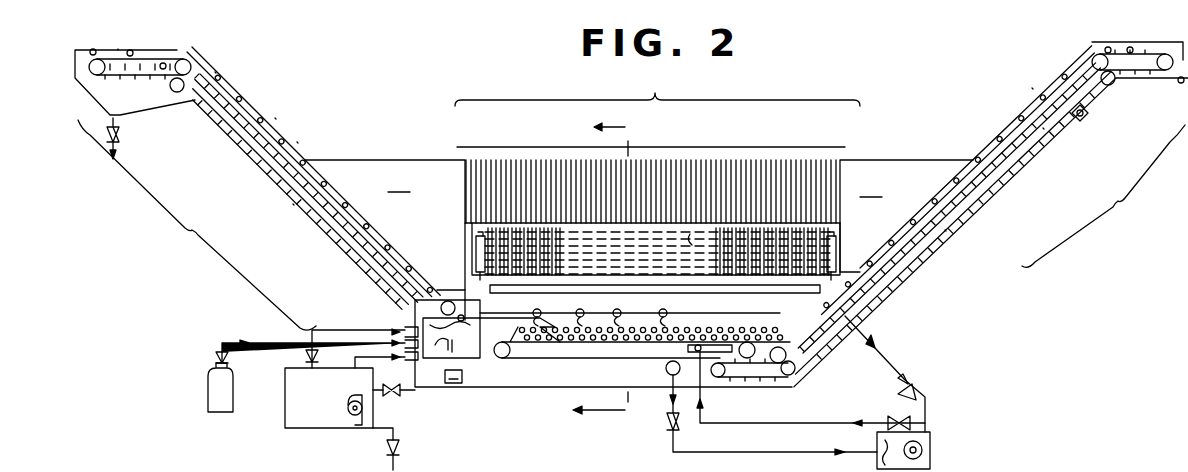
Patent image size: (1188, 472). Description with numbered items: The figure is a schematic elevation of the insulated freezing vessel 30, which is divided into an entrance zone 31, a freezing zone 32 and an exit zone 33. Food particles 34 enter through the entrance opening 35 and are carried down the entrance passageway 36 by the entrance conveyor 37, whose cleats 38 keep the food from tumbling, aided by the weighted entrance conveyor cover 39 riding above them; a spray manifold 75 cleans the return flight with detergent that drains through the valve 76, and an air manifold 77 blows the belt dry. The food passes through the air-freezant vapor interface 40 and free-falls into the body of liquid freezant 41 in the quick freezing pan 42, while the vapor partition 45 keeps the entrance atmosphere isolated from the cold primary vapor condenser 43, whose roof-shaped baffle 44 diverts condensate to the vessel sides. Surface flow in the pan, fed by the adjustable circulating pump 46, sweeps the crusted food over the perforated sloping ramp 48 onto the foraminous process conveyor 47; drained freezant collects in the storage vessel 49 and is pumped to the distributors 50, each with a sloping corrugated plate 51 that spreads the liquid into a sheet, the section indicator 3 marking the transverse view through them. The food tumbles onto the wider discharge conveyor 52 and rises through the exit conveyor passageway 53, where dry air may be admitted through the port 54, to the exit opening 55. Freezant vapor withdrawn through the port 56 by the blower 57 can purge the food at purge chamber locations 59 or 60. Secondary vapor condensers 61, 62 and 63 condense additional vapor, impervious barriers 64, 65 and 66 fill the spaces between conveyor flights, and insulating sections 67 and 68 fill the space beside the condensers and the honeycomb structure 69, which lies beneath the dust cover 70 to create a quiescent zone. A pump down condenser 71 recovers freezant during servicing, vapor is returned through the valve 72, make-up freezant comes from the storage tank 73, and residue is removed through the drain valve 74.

The section line 3- 3 is at (604, 270).
The insulated freezing vessel 30 is at (368, 156).
The entrance zone 31 is at (197, 225).
The freezing zone 32 is at (657, 90).
The exit zone 33 is at (1103, 196).
The food particles 34 is at (130, 50).
The entrance opening 35 is at (121, 52).
The entrance passageway 36 is at (244, 94).
The entrance conveyor 37 is at (276, 121).
The cleats 38 is at (298, 145).
The entrance conveyor cover 39 is at (216, 73).
The air-freezant vapor interface 40 is at (440, 296).
The body of liquid freezant 41 is at (442, 339).
The quick freezing pan 42 is at (488, 320).
The primary vapor condenser 43 is at (656, 249).
The roof-shaped baffle 44 is at (744, 293).
The vapor partition 45 is at (468, 246).
The circulating pump 46 is at (352, 428).
The process conveyor 47 is at (565, 360).
The sloping ramp 48 is at (504, 318).
The storage vessel 49 is at (330, 402).
The liquid freezant distributors 50 is at (565, 318).
The sloping corrugated plate 51 is at (668, 316).
The discharge conveyor 52 is at (822, 316).
The exit conveyor passageway 53 is at (1010, 118).
The port 54 is at (1043, 80).
The exit opening 55 is at (1180, 84).
The port 56 is at (665, 369).
The blower 57 is at (928, 442).
The purge chamber location 59 is at (855, 325).
The purge chamber location 60 is at (702, 342).
The secondary vapor condenser 61 is at (684, 248).
The secondary vapor condenser 62 is at (1044, 130).
The secondary vapor condenser 63 is at (1084, 120).
The impervious barrier 64 is at (294, 204).
The impervious barrier 65 is at (947, 231).
The impervious barrier 66 is at (1032, 88).
The insulating barrier section 67 is at (399, 184).
The insulating barrier section 68 is at (871, 189).
The honeycomb structure 69 is at (730, 195).
The dust cover 70 is at (686, 143).
The pump down condenser 71 is at (463, 378).
The valve 72 is at (316, 358).
The storage tank 73 is at (232, 400).
The drain valve 74 is at (396, 450).
The spray manifold 75 is at (163, 70).
The valve 76 is at (115, 134).
The air manifold 77 is at (91, 50).